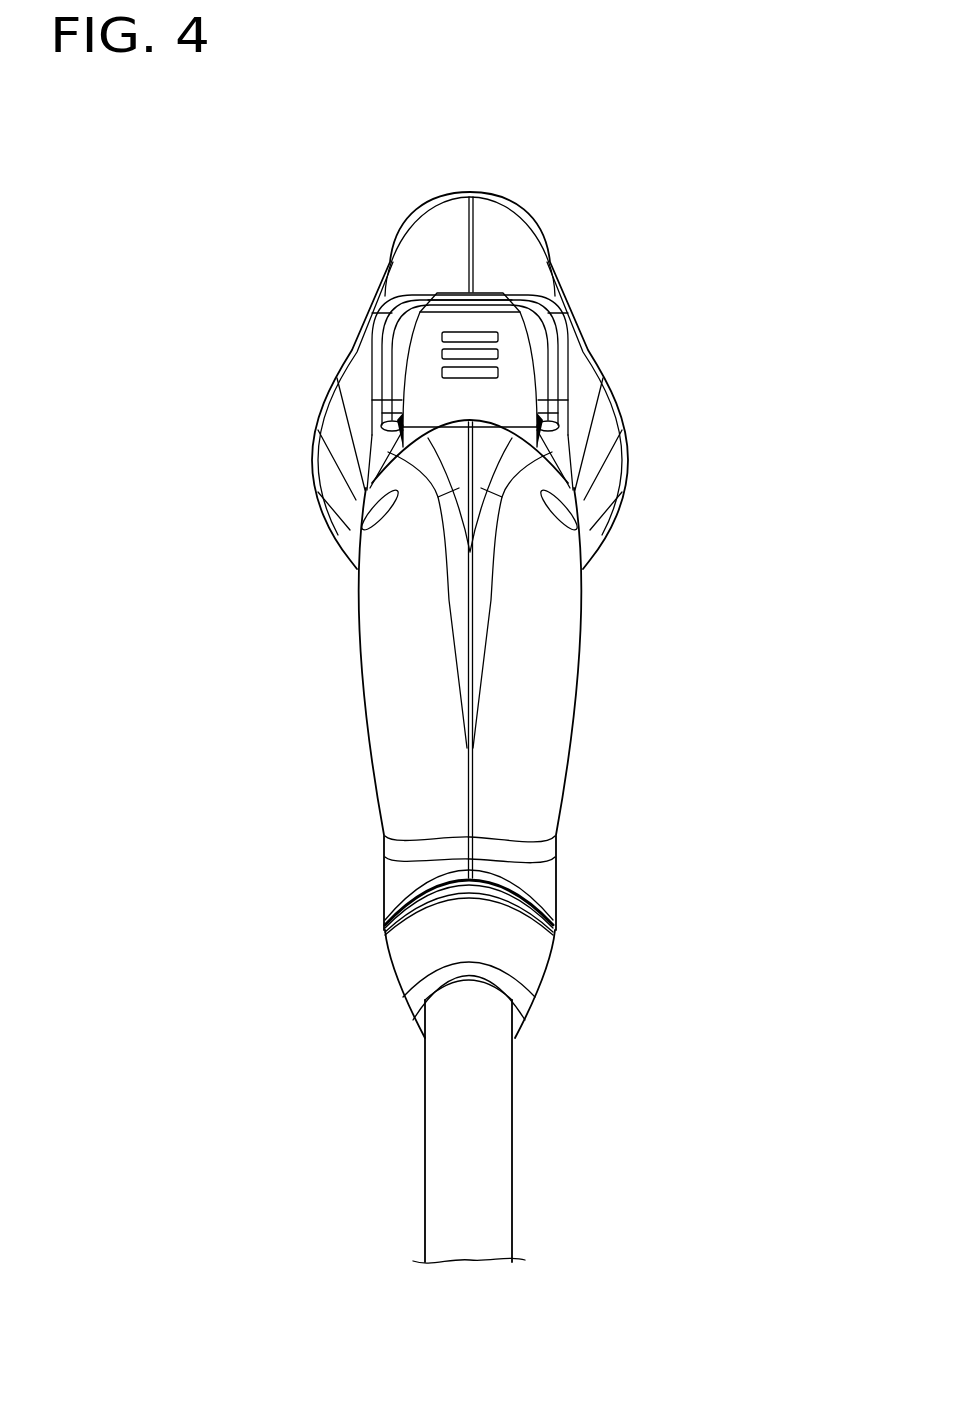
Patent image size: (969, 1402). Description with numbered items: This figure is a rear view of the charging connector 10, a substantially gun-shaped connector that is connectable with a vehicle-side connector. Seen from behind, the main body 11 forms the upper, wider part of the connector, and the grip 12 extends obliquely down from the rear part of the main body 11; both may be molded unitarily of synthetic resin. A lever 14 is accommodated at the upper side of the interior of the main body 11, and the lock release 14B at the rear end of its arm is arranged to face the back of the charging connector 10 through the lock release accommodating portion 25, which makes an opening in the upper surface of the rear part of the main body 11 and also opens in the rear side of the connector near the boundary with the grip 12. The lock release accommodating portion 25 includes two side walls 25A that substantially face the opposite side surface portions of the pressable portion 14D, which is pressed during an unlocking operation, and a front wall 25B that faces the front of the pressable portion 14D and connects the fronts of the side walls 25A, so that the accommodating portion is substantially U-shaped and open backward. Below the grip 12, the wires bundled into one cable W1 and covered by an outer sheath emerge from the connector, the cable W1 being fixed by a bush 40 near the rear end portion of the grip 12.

The charging connector 10 is at (466, 130).
The main body 11 is at (636, 437).
The grip 12 is at (580, 694).
The lever 14 is at (417, 338).
The lock release 14B is at (452, 323).
The pressable portion 14D is at (488, 373).
The lock release accommodating portion 25 is at (562, 326).
The side walls 25A is at (382, 380).
The front wall 25B is at (477, 299).
The bush 40 is at (530, 957).
The cable W1 is at (493, 1118).